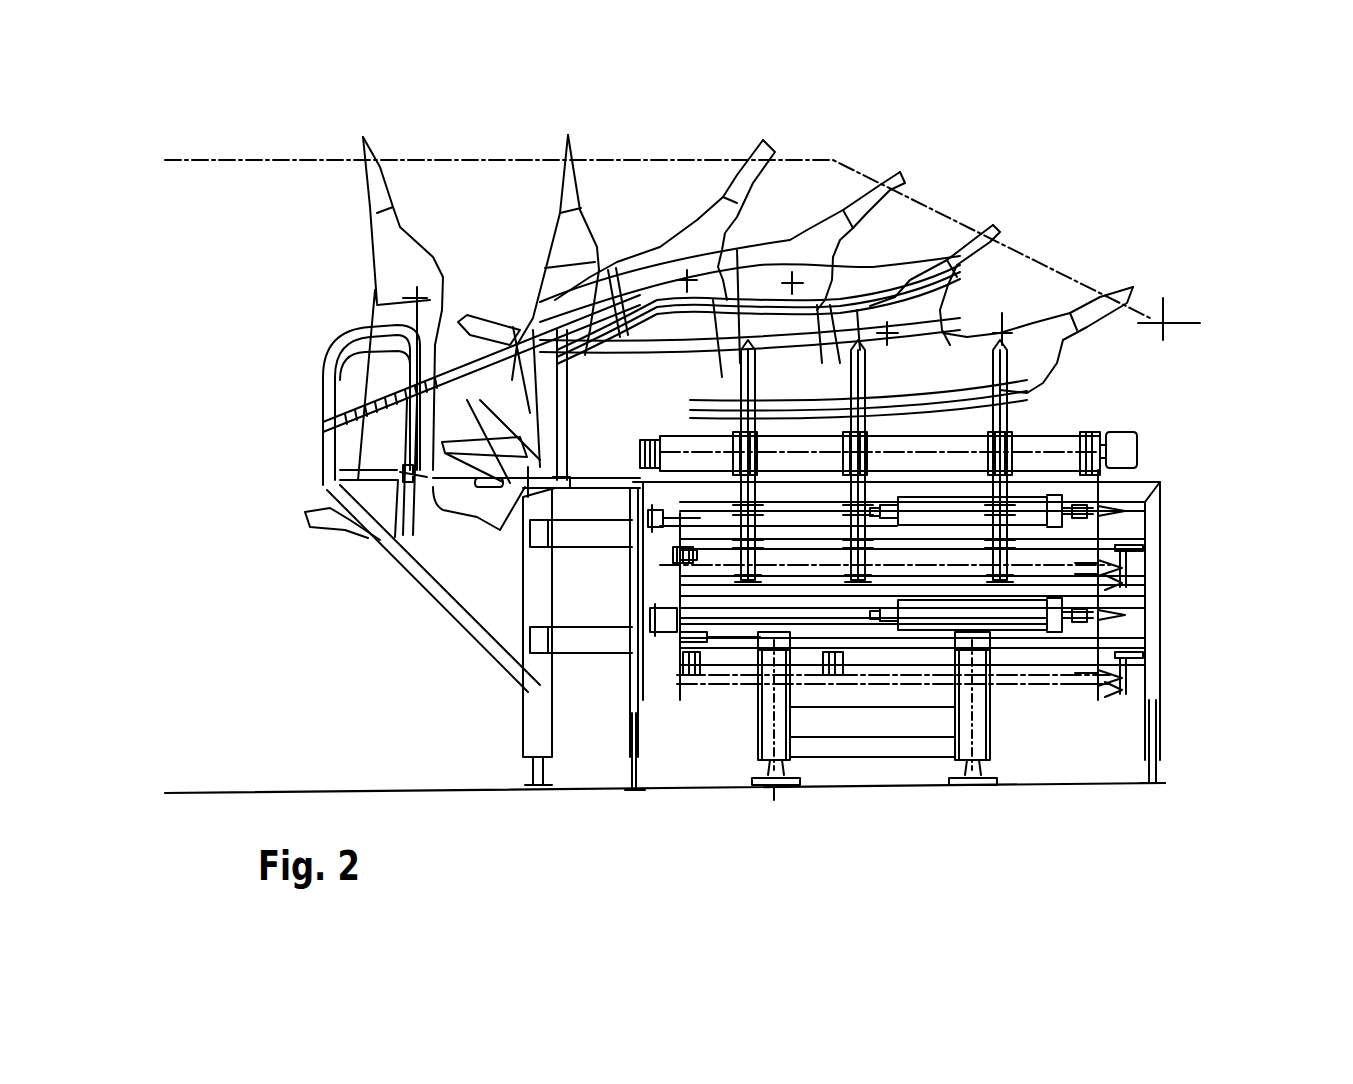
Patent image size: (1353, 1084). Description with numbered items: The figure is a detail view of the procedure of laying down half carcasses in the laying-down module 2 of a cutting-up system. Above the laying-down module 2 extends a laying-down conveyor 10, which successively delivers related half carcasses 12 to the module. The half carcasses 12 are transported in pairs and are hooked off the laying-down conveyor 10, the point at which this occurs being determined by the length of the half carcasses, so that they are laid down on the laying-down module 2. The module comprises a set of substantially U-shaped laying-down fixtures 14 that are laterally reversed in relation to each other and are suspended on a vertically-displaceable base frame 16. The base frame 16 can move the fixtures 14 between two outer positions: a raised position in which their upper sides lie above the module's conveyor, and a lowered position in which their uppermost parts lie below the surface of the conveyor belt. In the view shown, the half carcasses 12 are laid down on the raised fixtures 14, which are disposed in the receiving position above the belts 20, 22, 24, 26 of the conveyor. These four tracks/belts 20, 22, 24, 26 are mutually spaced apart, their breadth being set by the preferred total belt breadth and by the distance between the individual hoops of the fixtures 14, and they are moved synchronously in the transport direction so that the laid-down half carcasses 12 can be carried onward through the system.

The laying-down module 2 is at (915, 584).
The laying-down conveyor 10 is at (634, 160).
The half carcasses 12 is at (422, 281).
The laying-down fixtures 14 is at (1010, 357).
The base frame 16 is at (1067, 558).
The track/belt 20 is at (882, 431).
The track/belt 22 is at (770, 440).
The track/belt 24 is at (948, 440).
The track/belt 26 is at (1033, 440).